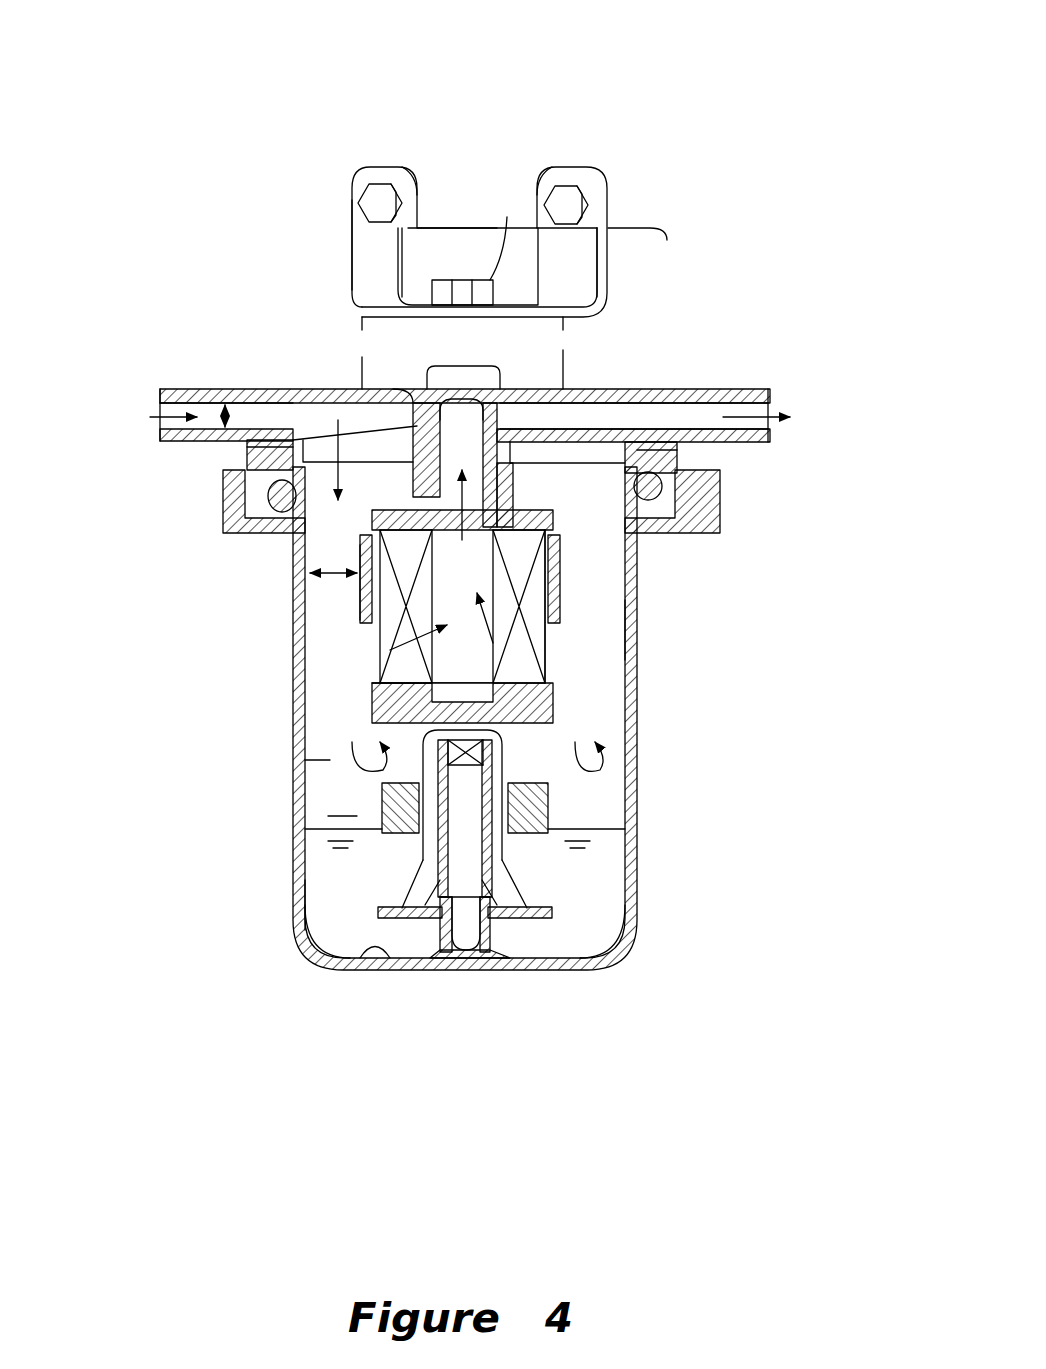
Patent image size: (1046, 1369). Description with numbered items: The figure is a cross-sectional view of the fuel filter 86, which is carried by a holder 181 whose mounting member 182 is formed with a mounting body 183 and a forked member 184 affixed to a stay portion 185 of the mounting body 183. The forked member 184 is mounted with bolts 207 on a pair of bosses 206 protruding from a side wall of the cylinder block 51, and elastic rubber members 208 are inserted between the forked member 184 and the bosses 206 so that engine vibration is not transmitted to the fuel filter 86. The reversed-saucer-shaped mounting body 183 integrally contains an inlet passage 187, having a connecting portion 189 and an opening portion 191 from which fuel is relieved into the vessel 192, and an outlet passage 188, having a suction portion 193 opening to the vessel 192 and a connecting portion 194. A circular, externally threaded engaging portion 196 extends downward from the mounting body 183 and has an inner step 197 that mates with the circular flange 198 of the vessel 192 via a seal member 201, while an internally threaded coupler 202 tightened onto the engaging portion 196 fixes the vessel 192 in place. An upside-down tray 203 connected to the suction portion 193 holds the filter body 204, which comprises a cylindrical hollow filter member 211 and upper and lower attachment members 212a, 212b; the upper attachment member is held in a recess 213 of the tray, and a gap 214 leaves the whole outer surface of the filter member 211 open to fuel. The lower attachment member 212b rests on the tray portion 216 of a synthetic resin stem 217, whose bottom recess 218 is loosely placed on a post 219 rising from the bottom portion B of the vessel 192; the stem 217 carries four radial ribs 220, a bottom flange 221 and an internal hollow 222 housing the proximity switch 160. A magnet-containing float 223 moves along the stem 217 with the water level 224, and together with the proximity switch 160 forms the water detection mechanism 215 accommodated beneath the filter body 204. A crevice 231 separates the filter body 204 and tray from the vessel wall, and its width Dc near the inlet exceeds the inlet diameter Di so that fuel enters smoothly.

The cylinder block 51 is at (606, 143).
The fuel filter 86 is at (745, 240).
The proximity switch 160 is at (447, 755).
The holder 181 is at (678, 364).
The mounting member 182 is at (318, 275).
The mounting body 183 is at (312, 378).
The forked member 184 is at (612, 268).
The stay portion 185 is at (565, 335).
The inlet passage 187 is at (222, 395).
The outlet passage 188 is at (737, 390).
The connecting portion 189 is at (172, 390).
The opening portion 191 is at (368, 452).
The vessel 192 is at (300, 815).
The suction portion 193 is at (490, 388).
The connecting portion 194 is at (772, 392).
The engaging portion 196 is at (680, 452).
The step 197 is at (282, 445).
The circular flange 198 is at (293, 533).
The seal member 201 is at (700, 472).
The coupler 202 is at (700, 540).
The upside-down tray 203 is at (548, 598).
The filter body 204 is at (580, 638).
The bosses 206 is at (462, 187).
The bolts 207 is at (373, 197).
The elastic members 208 is at (414, 187).
The filter member 211 is at (548, 665).
The upper attachment member 212a is at (360, 545).
The lower attachment member 212b is at (378, 684).
The recess 213 is at (558, 560).
The gap 214 is at (375, 640).
The water detection mechanism 215 is at (578, 795).
The tray portion 216 is at (553, 712).
The stem 217 is at (512, 887).
The recess 218 is at (456, 975).
The post 219 is at (520, 975).
The ribs 220 is at (300, 923).
The flange 221 is at (575, 975).
The hollow 222 is at (300, 883).
The float 223 is at (530, 818).
The level 224 is at (625, 812).
The crevice 231 is at (330, 610).
The diameter of the inlet passage Di is at (222, 417).
The width of the crevice Dc is at (241, 615).
The bottom portion B is at (355, 967).